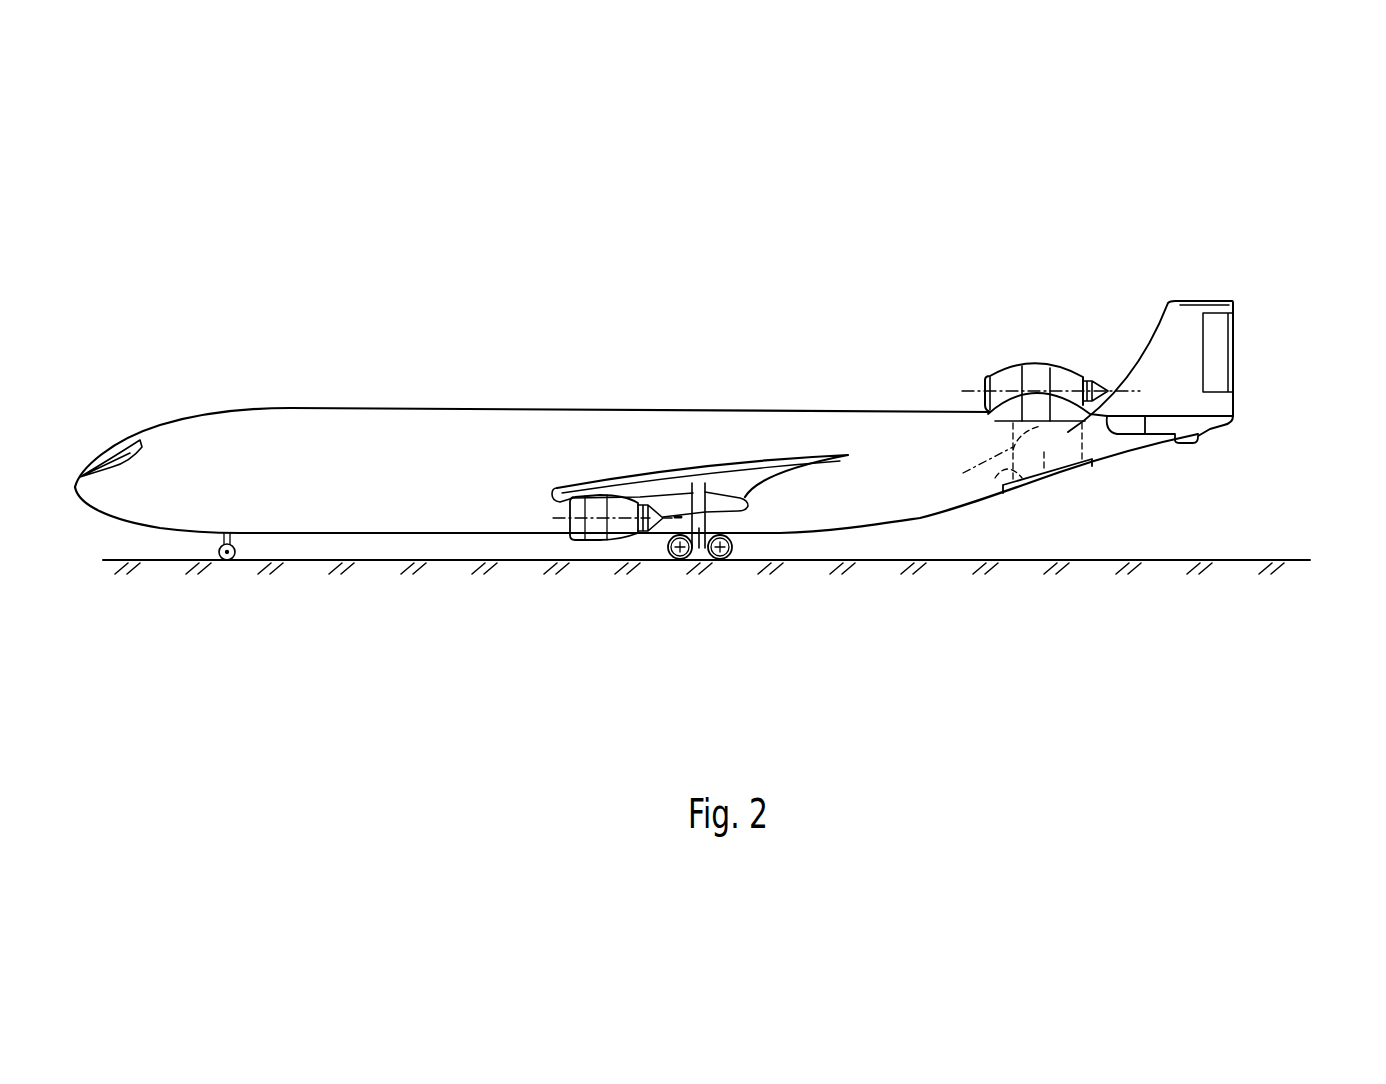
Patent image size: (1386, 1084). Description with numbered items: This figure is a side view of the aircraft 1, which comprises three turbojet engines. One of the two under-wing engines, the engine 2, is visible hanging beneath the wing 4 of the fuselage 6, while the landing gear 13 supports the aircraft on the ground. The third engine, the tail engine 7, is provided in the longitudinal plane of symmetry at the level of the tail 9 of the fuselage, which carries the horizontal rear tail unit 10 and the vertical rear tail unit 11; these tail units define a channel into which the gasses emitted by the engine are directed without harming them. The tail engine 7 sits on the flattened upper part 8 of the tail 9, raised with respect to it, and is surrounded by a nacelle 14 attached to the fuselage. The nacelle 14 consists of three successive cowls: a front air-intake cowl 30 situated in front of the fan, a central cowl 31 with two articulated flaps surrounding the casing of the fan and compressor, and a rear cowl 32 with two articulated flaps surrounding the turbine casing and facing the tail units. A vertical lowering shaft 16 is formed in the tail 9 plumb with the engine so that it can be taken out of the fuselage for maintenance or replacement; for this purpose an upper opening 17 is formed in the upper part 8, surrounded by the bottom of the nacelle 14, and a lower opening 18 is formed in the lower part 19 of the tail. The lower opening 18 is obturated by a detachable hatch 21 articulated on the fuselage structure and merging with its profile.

The aircraft 1 is at (238, 380).
The engine 2 is at (597, 534).
The wing 4 is at (757, 482).
The fuselage 6 is at (499, 416).
The tail engine 7 is at (1101, 362).
The upper part of the tail 8 is at (1003, 427).
The tail of the fuselage 9 is at (1148, 452).
The horizontal rear tail unit 10 is at (1213, 403).
The vertical rear tail unit 11 is at (1170, 429).
The landing gear 13 is at (698, 545).
The nacelle 14 is at (972, 366).
The lowering shaft 16 is at (1040, 478).
The upper opening 17 is at (992, 457).
The lower opening 18 is at (997, 468).
The lower part of the tail 19 is at (1030, 490).
The hatch 21 is at (1073, 473).
The front air-intake cowl 30 is at (1013, 380).
The central cowl 31 is at (1040, 380).
The rear cowl 32 is at (1062, 380).